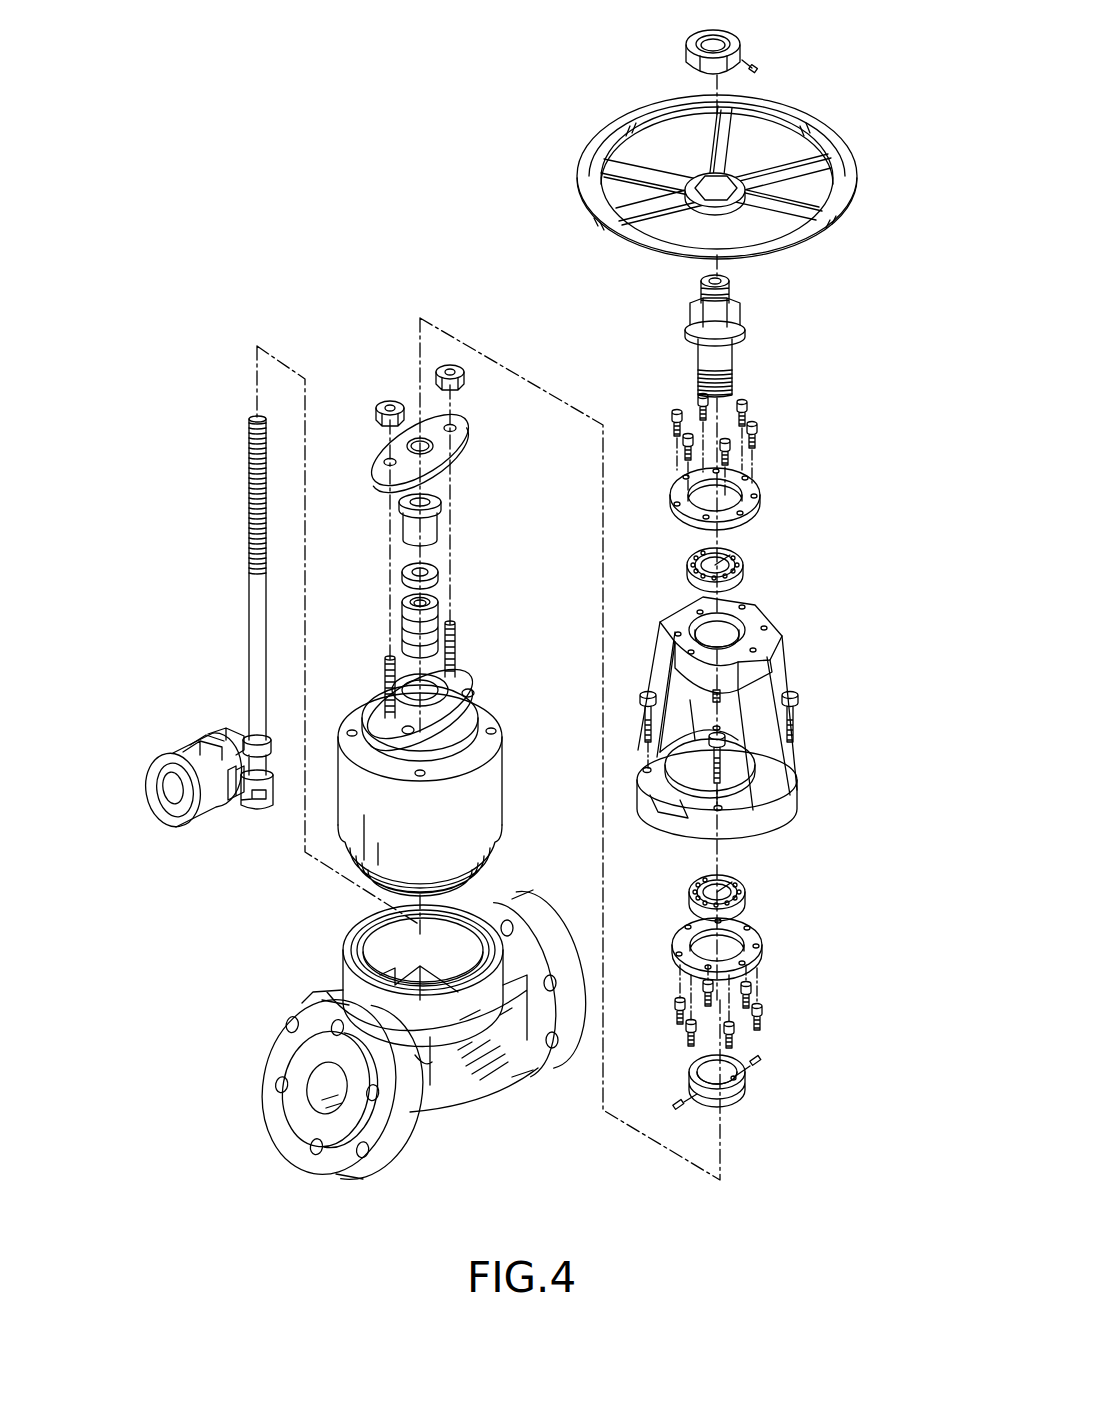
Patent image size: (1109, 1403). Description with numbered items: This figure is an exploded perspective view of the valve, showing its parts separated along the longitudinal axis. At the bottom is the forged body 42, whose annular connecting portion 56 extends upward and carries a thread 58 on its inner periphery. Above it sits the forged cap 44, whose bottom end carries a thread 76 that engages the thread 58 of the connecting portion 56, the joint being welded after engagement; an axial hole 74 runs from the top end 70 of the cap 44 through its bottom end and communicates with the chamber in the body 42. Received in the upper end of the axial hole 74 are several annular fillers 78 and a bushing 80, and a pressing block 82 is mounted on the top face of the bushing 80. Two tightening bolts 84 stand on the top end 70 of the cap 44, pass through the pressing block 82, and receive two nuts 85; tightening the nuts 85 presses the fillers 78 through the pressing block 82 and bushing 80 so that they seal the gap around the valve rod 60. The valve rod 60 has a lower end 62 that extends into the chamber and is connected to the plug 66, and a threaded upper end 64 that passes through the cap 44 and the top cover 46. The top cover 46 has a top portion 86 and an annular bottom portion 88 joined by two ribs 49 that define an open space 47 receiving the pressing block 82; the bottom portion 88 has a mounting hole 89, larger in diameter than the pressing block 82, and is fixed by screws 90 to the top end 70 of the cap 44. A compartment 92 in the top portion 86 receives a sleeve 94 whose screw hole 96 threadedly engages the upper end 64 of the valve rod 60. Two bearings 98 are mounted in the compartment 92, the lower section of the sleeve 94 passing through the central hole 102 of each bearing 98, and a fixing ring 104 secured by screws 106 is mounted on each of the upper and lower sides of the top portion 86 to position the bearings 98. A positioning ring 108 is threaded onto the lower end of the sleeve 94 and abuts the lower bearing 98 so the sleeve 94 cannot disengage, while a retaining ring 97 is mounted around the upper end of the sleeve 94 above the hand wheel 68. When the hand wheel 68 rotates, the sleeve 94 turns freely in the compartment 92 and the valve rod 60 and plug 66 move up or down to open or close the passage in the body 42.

The body 42 is at (425, 1036).
The cap 44 is at (457, 790).
The top cover 46 is at (707, 728).
The open space 47 is at (678, 708).
The ribs 49 is at (655, 672).
The connecting portion 56 is at (350, 932).
The thread 58 is at (475, 932).
The valve rod 60 is at (251, 612).
The lower end 62 is at (259, 750).
The upper end 64 is at (250, 438).
The plug 66 is at (178, 810).
The hand wheel 68 is at (833, 190).
The top end 70 is at (490, 742).
The axial hole 74 is at (425, 688).
The thread 76 is at (480, 870).
The fillers 78 is at (435, 598).
The bushing 80 is at (430, 533).
The pressing block 82 is at (442, 455).
The tightening bolts 84 is at (452, 638).
The nuts 85 is at (385, 397).
The top portion 86 is at (752, 640).
The bottom portion 88 is at (738, 822).
The mounting hole 89 is at (690, 790).
The screws 90 is at (720, 758).
The compartment 92 is at (722, 632).
The sleeve 94 is at (722, 352).
The screw hole 96 is at (725, 285).
The retaining ring 97 is at (760, 44).
The bearing 98 is at (735, 572).
The central hole 102 is at (740, 552).
The fixing ring 104 is at (760, 490).
The screws 106 is at (757, 433).
The positioning ring 108 is at (730, 1098).